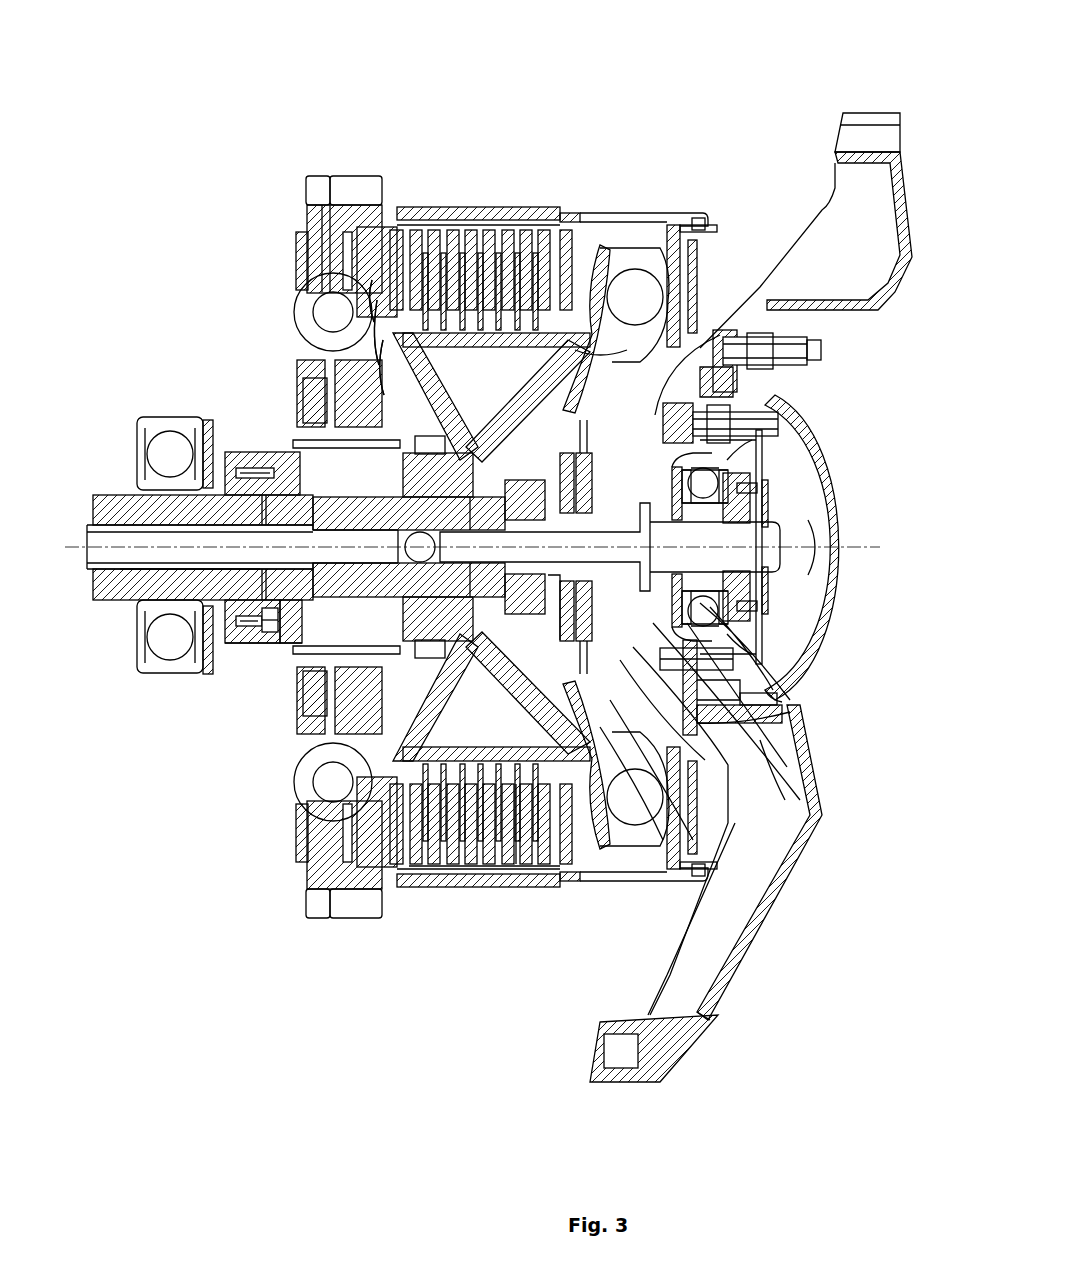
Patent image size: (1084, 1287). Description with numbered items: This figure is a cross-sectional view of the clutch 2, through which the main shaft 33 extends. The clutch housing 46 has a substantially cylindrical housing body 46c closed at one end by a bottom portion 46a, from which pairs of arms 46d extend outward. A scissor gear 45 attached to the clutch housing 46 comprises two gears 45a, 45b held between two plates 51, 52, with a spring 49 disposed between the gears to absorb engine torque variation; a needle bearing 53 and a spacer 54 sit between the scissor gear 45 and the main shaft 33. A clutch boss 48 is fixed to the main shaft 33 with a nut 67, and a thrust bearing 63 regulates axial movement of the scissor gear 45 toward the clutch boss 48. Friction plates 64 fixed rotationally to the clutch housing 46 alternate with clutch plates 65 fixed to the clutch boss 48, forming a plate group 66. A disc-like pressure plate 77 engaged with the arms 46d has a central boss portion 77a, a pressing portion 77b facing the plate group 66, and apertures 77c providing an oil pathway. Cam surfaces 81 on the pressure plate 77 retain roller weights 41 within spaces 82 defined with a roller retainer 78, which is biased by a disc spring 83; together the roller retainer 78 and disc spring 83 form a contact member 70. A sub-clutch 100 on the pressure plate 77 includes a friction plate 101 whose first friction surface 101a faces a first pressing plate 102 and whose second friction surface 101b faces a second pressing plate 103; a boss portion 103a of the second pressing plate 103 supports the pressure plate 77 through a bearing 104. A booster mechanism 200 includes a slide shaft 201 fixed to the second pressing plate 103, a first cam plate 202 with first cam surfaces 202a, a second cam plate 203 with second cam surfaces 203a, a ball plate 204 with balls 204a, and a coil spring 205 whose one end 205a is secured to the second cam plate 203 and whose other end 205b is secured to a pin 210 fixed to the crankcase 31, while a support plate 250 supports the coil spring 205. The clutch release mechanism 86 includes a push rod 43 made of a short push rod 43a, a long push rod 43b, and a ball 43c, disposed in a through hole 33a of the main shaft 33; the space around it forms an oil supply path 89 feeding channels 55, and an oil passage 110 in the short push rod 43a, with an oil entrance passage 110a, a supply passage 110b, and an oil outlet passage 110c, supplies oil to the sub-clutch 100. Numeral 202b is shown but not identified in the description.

The clutch 2 is at (200, 108).
The crankcase 31 is at (720, 1024).
The main shaft 33 is at (118, 492).
The through hole 33a is at (112, 600).
The roller weights 41 is at (657, 842).
The push rod 43 is at (272, 740).
The short push rod 43a is at (290, 644).
The long push rod 43b is at (197, 642).
The ball 43c is at (268, 634).
The scissor gear 45 is at (280, 128).
The gear 45a is at (362, 176).
The gear 45b is at (318, 176).
The clutch housing 46 is at (510, 208).
The bottom portion 46a is at (380, 228).
The housing body 46c is at (470, 207).
The arms 46d is at (620, 222).
The clutch boss 48 is at (507, 380).
The spring 49 is at (296, 312).
The plate 51 is at (298, 270).
The plate 52 is at (318, 248).
The needle bearing 53 is at (308, 424).
The spacer 54 is at (302, 460).
The channels 55 is at (175, 418).
The thrust bearing 63 is at (440, 676).
The friction plates 64 is at (454, 868).
The clutch plates 65 is at (472, 868).
The plate group 66 is at (496, 948).
The nut 67 is at (562, 637).
The contact member 70 is at (812, 1018).
The pressure plate 77 is at (600, 852).
The boss portion 77a is at (628, 462).
The pressing portion 77b is at (580, 870).
The apertures 77c is at (672, 240).
The roller retainer 78 is at (710, 905).
The cam surfaces 81 is at (618, 824).
The spaces 82 is at (700, 812).
The disc spring 83 is at (776, 880).
The clutch release mechanism 86 is at (74, 512).
The oil supply path 89 is at (128, 572).
The sub-clutch 100 is at (518, 828).
The friction plate 101 is at (795, 748).
The first friction surface 101a is at (768, 782).
The second friction surface 101b is at (752, 722).
The first pressing plate 102 is at (705, 790).
The second pressing plate 103 is at (785, 722).
The boss portion 103a is at (810, 596).
The bearing 104 is at (782, 708).
The oil passage 110 is at (160, 372).
The oil entrance passage 110a is at (383, 375).
The supply passage 110b is at (377, 340).
The oil outlet passage 110c is at (372, 300).
The booster mechanism 200 is at (772, 450).
The slide shaft 201 is at (782, 552).
The first cam plate 202 is at (722, 490).
The first cam surfaces 202a is at (722, 470).
The inner race 202b is at (722, 505).
The second cam plate 203 is at (822, 615).
The second cam surfaces 203a is at (790, 690).
The ball plate 204 is at (752, 490).
The balls 204a is at (748, 434).
The coil spring 205 is at (735, 640).
The end 205a is at (745, 672).
The end 205b is at (748, 398).
The pin 210 is at (718, 330).
The support plate 250 is at (764, 570).